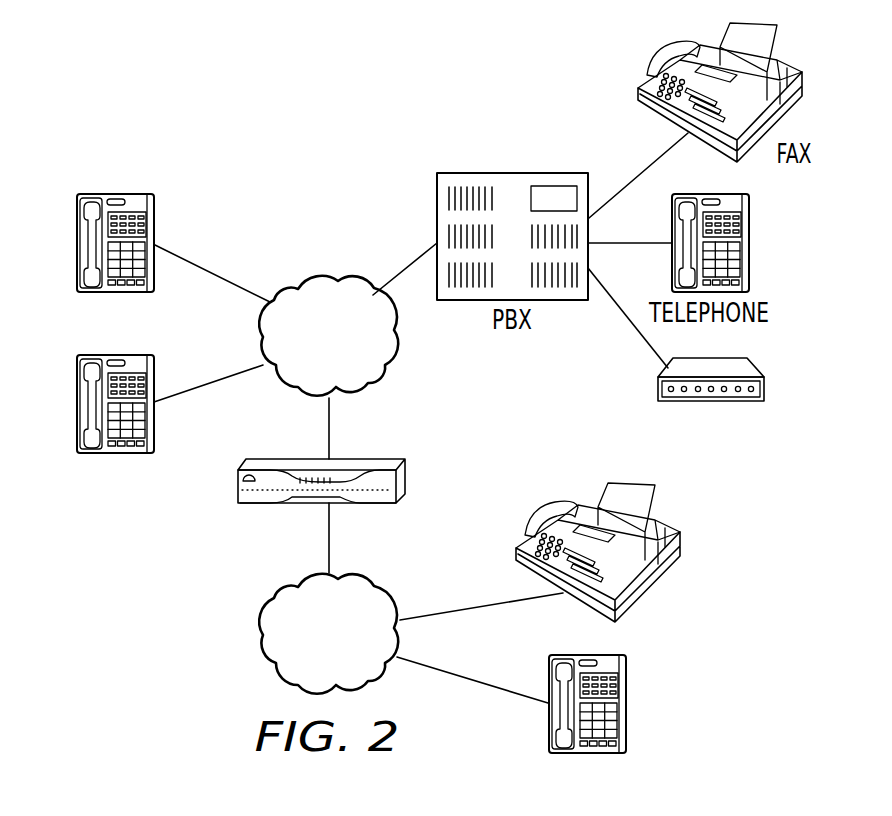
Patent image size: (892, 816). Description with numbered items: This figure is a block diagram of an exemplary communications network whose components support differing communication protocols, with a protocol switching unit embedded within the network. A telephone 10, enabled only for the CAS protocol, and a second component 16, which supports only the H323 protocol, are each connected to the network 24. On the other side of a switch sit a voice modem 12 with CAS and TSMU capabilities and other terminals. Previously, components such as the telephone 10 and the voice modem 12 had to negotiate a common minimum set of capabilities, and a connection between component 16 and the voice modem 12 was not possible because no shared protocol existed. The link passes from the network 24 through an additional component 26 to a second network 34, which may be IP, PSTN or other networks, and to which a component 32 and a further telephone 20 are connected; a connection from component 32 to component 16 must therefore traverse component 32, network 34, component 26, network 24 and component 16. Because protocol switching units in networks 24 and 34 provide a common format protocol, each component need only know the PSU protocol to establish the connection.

The telephone 10 is at (75, 245).
The telephone component 16 is at (75, 402).
The telephone 20 is at (626, 705).
The network 24 is at (314, 353).
The network 34 is at (314, 651).
The additional component 26 is at (410, 473).
The voice modem 12 is at (765, 388).
The fax component 32 is at (652, 598).